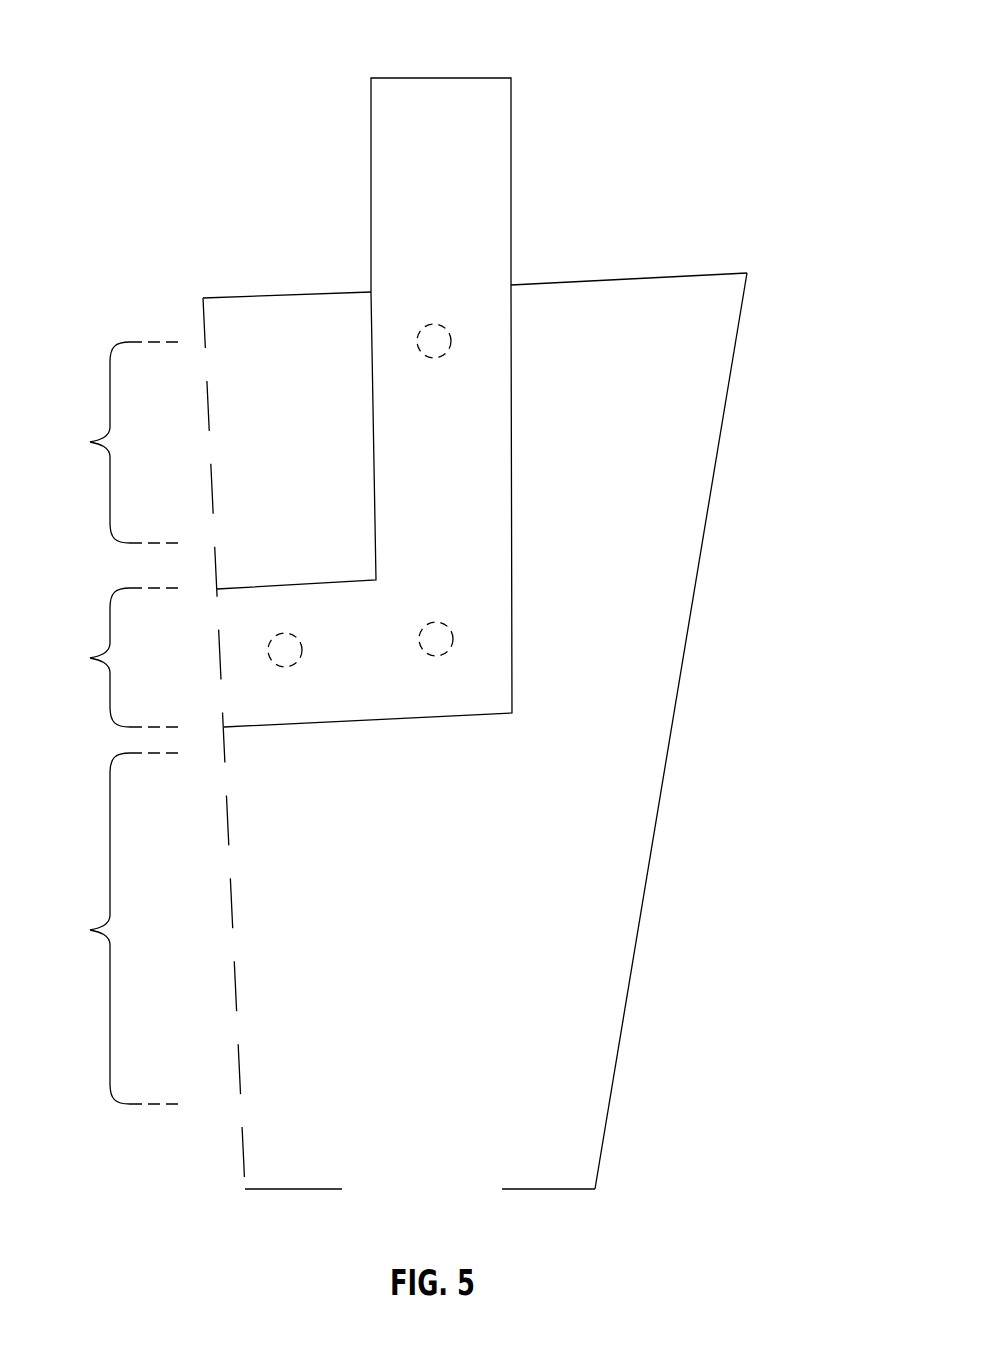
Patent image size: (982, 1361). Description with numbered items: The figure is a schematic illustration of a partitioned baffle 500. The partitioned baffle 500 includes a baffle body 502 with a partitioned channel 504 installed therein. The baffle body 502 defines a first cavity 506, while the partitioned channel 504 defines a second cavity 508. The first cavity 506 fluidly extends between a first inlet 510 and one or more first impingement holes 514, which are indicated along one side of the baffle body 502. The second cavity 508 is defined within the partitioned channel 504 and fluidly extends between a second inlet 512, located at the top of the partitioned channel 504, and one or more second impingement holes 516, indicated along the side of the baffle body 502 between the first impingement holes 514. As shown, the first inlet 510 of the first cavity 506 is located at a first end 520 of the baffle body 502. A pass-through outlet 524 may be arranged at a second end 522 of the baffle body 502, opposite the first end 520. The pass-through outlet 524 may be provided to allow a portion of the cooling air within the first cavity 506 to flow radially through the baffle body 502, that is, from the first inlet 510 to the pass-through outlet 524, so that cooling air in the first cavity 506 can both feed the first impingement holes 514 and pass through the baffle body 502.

The partitioned baffle 500 is at (735, 78).
The baffle body 502 is at (715, 475).
The partitioned channel 504 is at (512, 183).
The first cavity 506 is at (312, 470).
The second cavity 508 is at (463, 474).
The first inlet 510 is at (680, 272).
The second inlet 512 is at (458, 55).
The first impingement holes 514 is at (110, 723).
The second impingement holes 516 is at (110, 657).
The first end 520 is at (175, 272).
The second end 522 is at (227, 1188).
The pass-through outlet 524 is at (420, 1193).